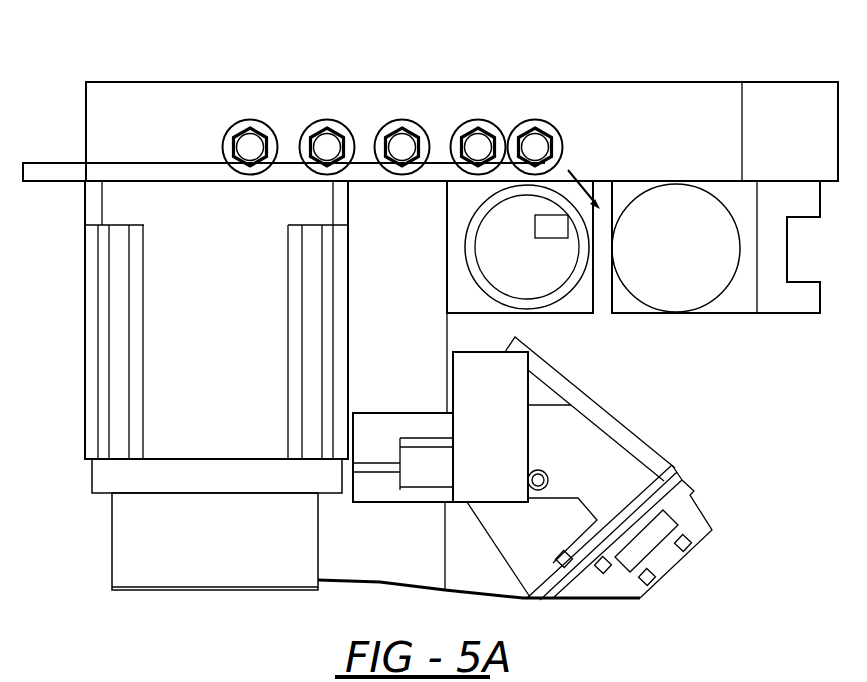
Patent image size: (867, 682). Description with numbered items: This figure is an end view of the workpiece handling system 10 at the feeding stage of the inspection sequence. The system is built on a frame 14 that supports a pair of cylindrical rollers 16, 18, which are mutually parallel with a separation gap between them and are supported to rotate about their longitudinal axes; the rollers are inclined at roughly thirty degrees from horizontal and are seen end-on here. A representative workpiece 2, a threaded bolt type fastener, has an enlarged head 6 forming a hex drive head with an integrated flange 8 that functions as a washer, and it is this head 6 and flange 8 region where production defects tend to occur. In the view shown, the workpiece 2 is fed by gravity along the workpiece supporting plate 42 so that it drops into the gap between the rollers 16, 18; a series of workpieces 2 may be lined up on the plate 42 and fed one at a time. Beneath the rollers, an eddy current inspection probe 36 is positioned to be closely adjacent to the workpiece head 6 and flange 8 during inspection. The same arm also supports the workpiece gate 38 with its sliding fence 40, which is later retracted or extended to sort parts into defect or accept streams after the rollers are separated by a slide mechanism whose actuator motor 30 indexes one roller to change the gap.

The workpiece 2 is at (327, 147).
The head 6 is at (250, 146).
The flange 8 is at (257, 121).
The workpiece handling system 10 is at (504, 60).
The frame 14 is at (642, 438).
The roller 16 is at (565, 302).
The roller 18 is at (723, 292).
The actuator motor 30 is at (113, 548).
The eddy current inspection probe 36 is at (557, 230).
The workpiece gate 38 is at (676, 467).
The sliding fence 40 is at (662, 493).
The workpiece supporting plate 42 is at (43, 181).